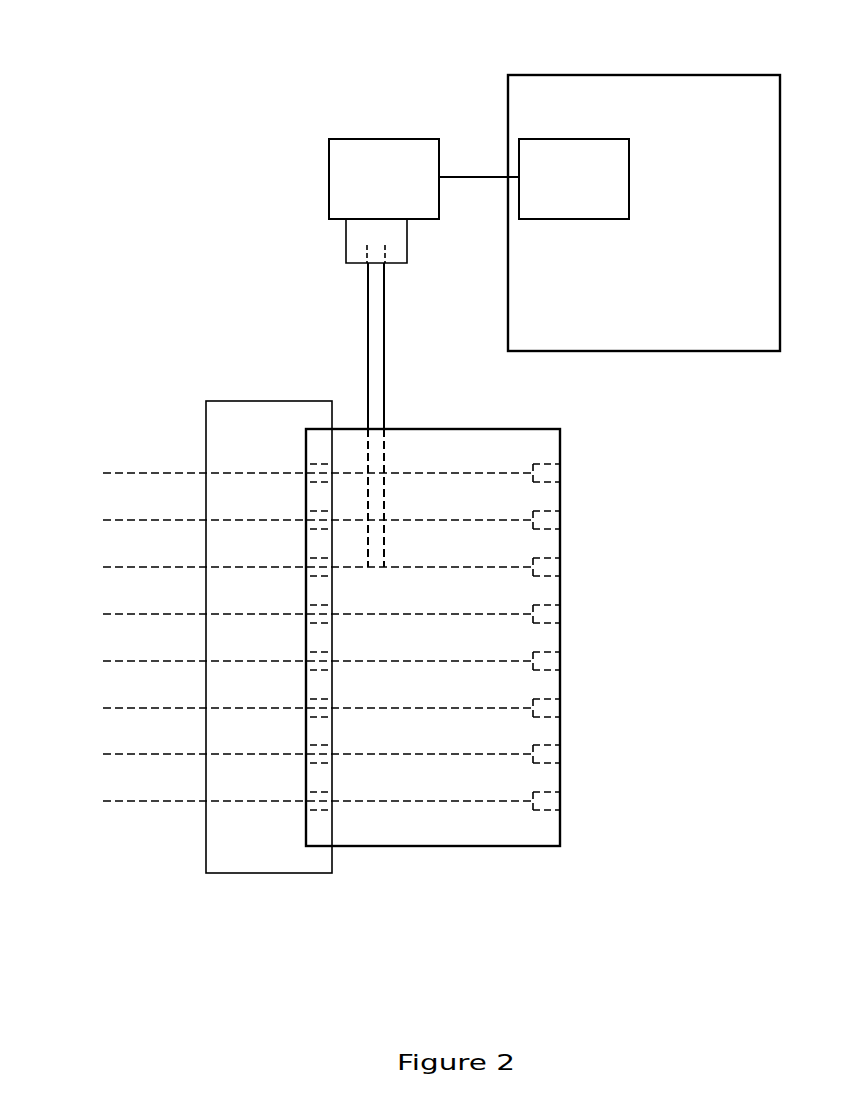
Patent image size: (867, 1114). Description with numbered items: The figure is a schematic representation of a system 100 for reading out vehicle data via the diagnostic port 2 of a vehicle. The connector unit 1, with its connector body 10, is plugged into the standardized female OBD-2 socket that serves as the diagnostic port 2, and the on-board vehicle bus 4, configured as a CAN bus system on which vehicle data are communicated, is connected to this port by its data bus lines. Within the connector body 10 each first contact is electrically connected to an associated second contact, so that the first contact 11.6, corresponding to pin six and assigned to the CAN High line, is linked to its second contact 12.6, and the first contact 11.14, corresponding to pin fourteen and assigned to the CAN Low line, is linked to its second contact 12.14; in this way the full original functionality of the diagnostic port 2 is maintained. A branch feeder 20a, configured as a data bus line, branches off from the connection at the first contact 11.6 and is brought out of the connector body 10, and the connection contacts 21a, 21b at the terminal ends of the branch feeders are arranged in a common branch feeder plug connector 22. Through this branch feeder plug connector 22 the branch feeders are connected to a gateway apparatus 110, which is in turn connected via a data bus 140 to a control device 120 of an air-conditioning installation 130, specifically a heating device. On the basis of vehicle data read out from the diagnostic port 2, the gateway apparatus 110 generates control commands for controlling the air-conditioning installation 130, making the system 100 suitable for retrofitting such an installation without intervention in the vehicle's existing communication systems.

The system 100 is at (127, 72).
The connector unit 1 is at (582, 793).
The diagnostic port 2 is at (238, 860).
The on-board vehicle bus 4 is at (170, 560).
The connector body 10 is at (522, 837).
The first contact 11.6 is at (318, 556).
The first contact 11.14 is at (319, 560).
The second contact 12.6 is at (560, 565).
The second contact 12.14 is at (598, 567).
The branch feeder 20a is at (367, 348).
The connection contact 21a is at (362, 257).
The connection contact 21b is at (390, 255).
The branch feeder plug connector 22 is at (355, 228).
The gateway apparatus 110 is at (384, 179).
The control device 120 is at (574, 179).
The air-conditioning installation 130 is at (644, 213).
The data bus 140 is at (480, 175).